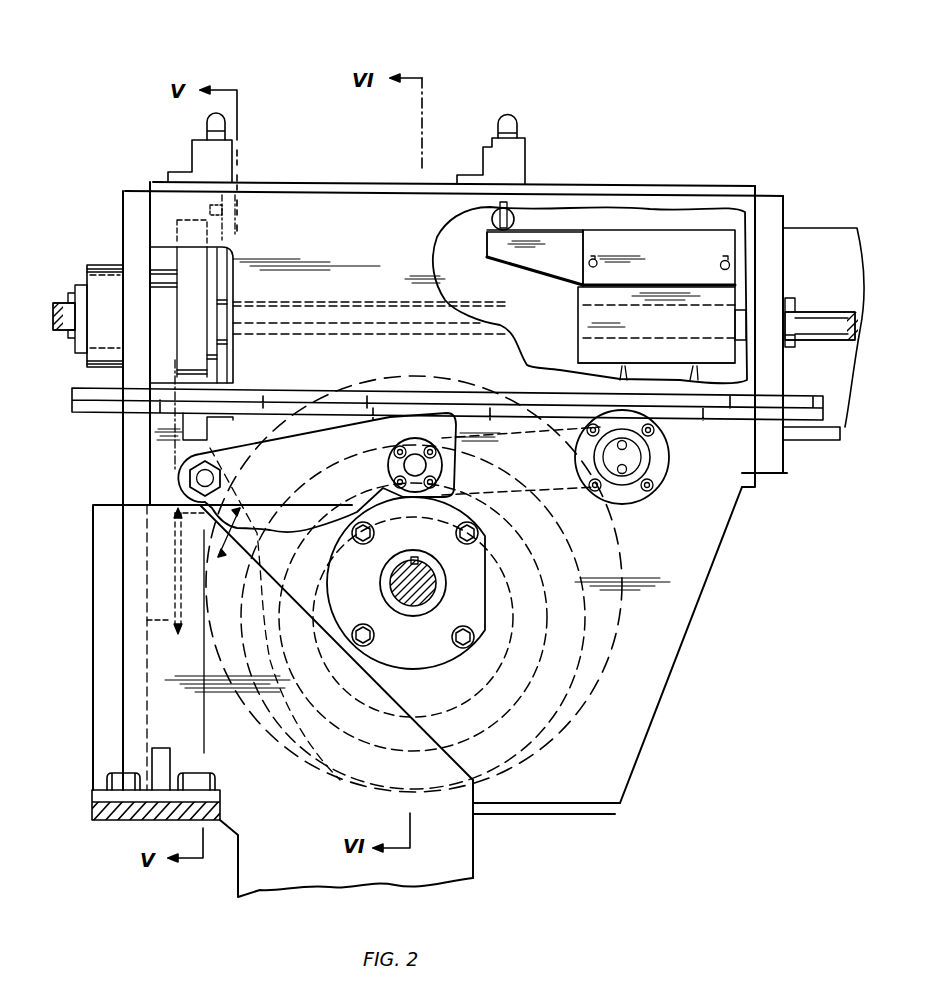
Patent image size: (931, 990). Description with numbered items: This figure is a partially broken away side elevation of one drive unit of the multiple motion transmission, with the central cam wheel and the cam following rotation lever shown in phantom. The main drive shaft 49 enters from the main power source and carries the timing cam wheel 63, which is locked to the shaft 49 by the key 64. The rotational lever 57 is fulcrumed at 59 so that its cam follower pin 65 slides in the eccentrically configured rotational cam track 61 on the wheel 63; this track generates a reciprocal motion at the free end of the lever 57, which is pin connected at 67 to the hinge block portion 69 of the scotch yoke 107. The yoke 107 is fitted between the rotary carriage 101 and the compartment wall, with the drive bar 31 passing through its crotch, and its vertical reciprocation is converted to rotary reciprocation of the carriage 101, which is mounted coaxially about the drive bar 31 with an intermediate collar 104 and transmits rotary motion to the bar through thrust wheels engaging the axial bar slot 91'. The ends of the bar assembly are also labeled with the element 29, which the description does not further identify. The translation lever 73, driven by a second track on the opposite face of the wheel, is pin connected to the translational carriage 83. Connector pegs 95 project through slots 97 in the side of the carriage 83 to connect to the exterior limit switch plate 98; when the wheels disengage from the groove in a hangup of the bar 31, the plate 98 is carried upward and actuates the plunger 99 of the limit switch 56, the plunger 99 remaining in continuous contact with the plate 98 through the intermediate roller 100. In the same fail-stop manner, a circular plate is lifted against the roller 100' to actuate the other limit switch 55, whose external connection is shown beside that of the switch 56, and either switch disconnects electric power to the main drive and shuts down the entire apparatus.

The shaft 29 is at (66, 332).
The drive bar 31 is at (66, 280).
The main drive shaft 49 is at (415, 592).
The limit switch 55 is at (205, 143).
The limit switch 56 is at (515, 150).
The rotational lever 57 is at (536, 495).
The fulcrum 59 is at (645, 456).
The rotational cam track 61 is at (548, 556).
The cam wheel 63 is at (548, 608).
The key 64 is at (416, 557).
The cam follower pin 65 is at (388, 464).
The pin connection 67 is at (197, 478).
The hinge block portion 69 is at (188, 455).
The translation lever 73 is at (612, 377).
The translational carriage 83 is at (578, 290).
The axial bar slot 91' is at (484, 313).
The connector pegs 95 is at (588, 264).
The slots 97 is at (596, 259).
The limit switch plate 98 is at (616, 305).
The plunger 99 is at (514, 216).
The intermediate roller 100 is at (487, 221).
The roller 100' is at (200, 218).
The rotary carriage 101 is at (216, 294).
The collar 104 is at (114, 238).
The scotch yoke 107 is at (163, 624).